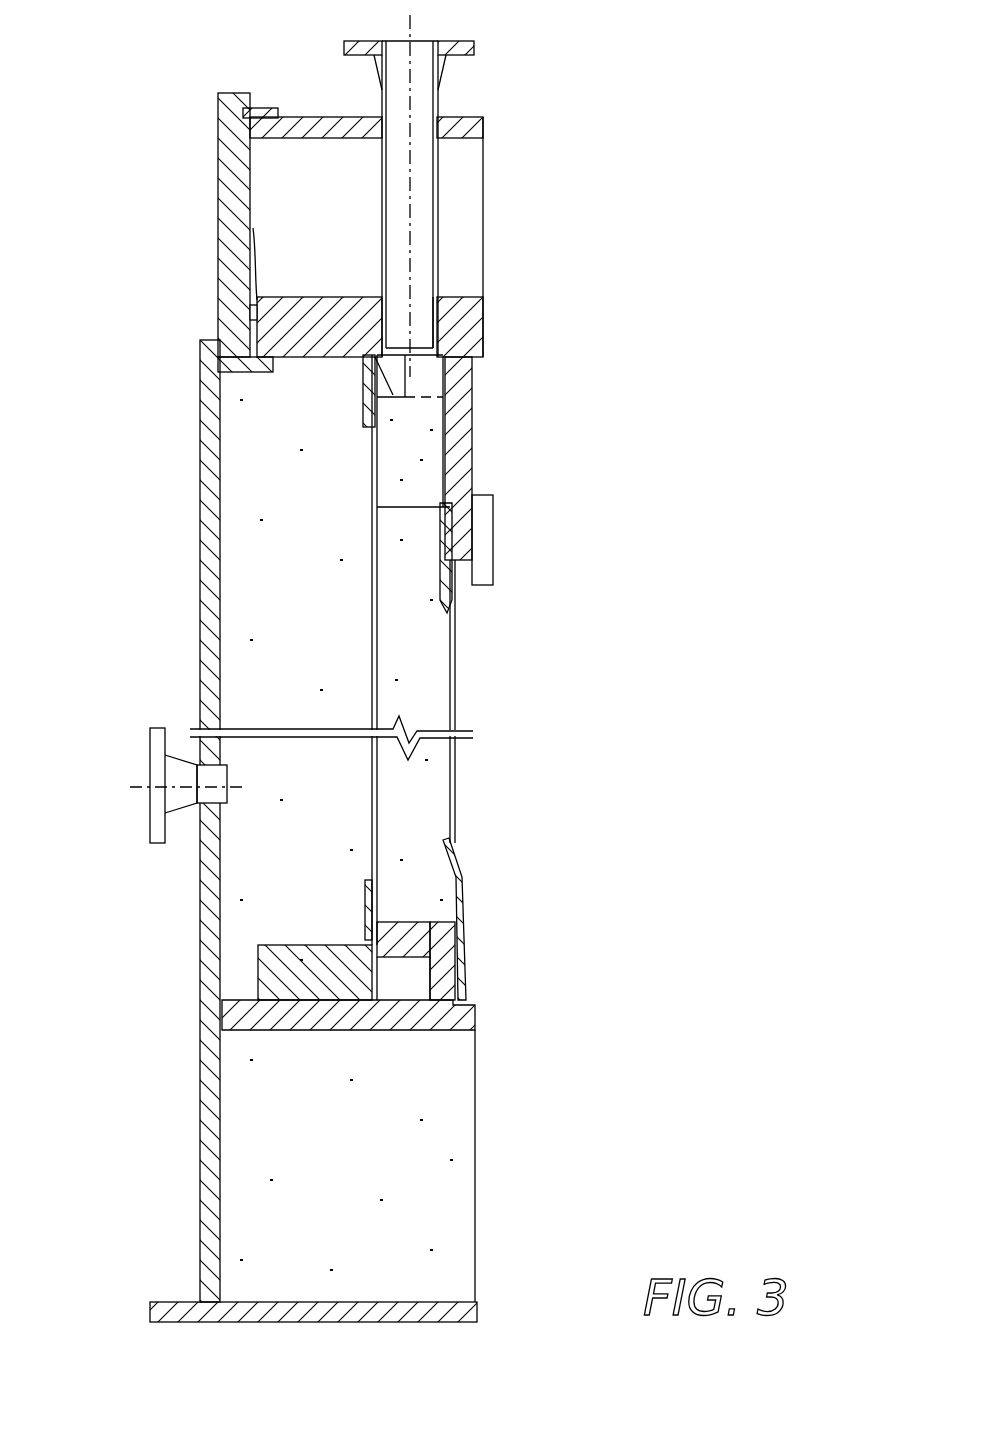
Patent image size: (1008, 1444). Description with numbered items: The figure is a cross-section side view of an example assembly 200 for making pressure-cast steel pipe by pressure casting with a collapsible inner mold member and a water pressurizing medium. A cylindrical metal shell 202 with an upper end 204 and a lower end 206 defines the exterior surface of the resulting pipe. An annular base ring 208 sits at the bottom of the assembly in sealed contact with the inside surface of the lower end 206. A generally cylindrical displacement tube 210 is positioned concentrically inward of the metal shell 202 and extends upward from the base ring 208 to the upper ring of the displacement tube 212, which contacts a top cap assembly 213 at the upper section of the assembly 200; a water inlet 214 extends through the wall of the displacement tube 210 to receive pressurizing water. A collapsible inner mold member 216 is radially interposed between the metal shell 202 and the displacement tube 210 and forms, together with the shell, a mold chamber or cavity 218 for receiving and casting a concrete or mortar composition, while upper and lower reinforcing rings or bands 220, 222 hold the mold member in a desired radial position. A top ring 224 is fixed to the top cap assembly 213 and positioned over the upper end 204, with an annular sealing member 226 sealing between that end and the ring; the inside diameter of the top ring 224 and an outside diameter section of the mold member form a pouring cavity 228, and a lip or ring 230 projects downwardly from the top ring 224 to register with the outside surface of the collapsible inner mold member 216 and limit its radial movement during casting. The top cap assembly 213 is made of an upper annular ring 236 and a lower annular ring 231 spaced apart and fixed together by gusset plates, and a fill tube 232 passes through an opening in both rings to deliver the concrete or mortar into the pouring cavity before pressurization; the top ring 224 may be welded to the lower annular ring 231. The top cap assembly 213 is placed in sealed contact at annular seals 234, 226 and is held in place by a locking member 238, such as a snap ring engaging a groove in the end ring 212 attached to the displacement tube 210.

The assembly 200 is at (545, 158).
The cylindrical metal shell 202 is at (462, 773).
The end 204 is at (448, 568).
The end 206 is at (462, 878).
The annular base ring 208 is at (344, 1040).
The displacement tube 210 is at (198, 943).
The upper ring of the displacement tube 212 is at (218, 140).
The top cap assembly 213 is at (489, 337).
The water inlet 214 is at (147, 779).
The collapsible inner mold member 216 is at (366, 585).
The mold chamber or cavity 218 is at (412, 835).
The upper reinforcing ring or band 220 is at (366, 393).
The lower reinforcing ring or band 222 is at (365, 910).
The top ring 224 is at (476, 412).
The annular sealing member 226 is at (447, 524).
The pouring cavity 228 is at (410, 445).
The lip or ring 230 is at (392, 370).
The lower annular ring 231 is at (440, 298).
The fill tube 232 is at (440, 107).
The annular seal 234 is at (250, 312).
The upper annular ring 236 is at (332, 117).
The locking member 238 is at (257, 108).